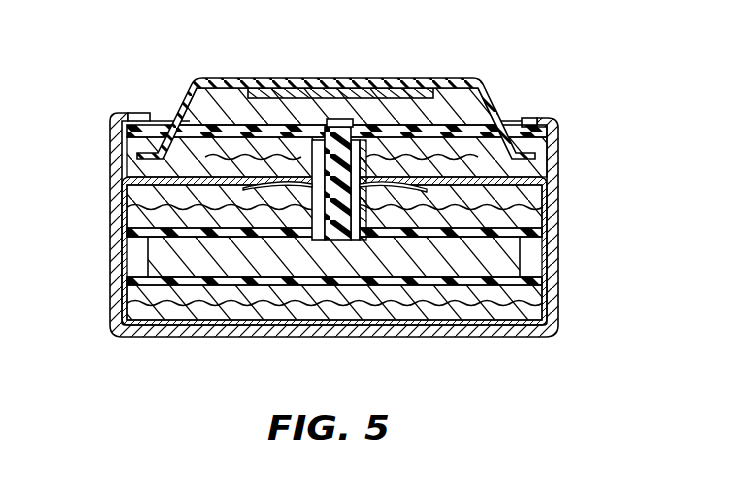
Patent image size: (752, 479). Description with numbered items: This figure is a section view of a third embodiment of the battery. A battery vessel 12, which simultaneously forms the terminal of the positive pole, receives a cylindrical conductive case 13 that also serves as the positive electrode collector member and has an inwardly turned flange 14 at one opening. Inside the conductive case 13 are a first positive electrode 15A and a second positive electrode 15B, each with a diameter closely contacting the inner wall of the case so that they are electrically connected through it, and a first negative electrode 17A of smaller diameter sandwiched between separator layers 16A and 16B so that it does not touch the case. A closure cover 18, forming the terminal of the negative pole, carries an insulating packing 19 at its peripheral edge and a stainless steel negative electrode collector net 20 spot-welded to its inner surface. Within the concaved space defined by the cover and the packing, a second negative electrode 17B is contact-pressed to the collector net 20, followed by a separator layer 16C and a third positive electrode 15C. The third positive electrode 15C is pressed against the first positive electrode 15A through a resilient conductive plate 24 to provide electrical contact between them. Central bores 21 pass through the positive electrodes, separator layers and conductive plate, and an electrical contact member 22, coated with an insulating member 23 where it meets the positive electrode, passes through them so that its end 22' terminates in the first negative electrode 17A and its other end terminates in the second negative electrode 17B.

The battery vessel 12 is at (167, 328).
The conductive case 13 is at (128, 193).
The inwardly turned flange 14 is at (545, 177).
The first positive electrode 15A is at (530, 222).
The second positive electrode 15B is at (532, 298).
The third positive electrode 15C is at (200, 145).
The separator layer 16A is at (130, 232).
The separator layer 16B is at (133, 280).
The separator layer 16C is at (230, 133).
The first negative electrode 17A is at (513, 258).
The second negative electrode 17B is at (240, 100).
The closure cover 18 is at (460, 82).
The insulating packing 19 is at (118, 122).
The negative electrode collector net 20 is at (300, 88).
The central bores 21 is at (312, 215).
The electrical contact member 22 is at (380, 140).
The end of electrical contact member 22' is at (336, 255).
The insulating member 23 is at (355, 190).
The resilient conductive plate 24 is at (404, 188).